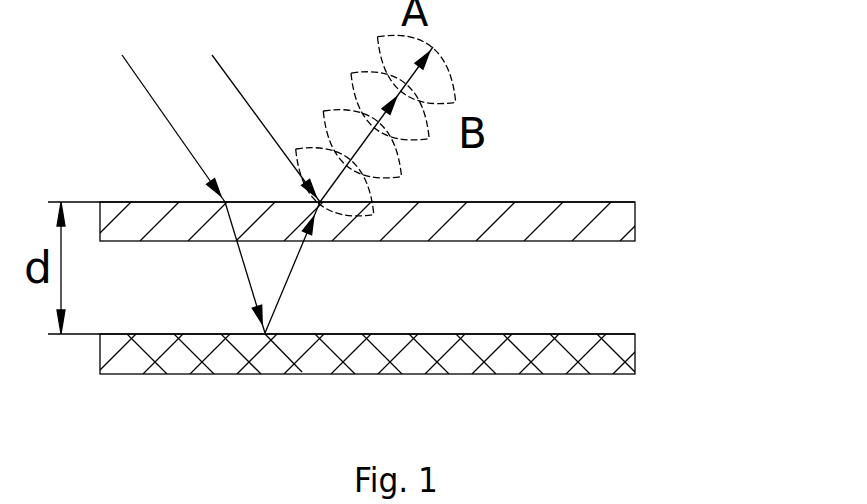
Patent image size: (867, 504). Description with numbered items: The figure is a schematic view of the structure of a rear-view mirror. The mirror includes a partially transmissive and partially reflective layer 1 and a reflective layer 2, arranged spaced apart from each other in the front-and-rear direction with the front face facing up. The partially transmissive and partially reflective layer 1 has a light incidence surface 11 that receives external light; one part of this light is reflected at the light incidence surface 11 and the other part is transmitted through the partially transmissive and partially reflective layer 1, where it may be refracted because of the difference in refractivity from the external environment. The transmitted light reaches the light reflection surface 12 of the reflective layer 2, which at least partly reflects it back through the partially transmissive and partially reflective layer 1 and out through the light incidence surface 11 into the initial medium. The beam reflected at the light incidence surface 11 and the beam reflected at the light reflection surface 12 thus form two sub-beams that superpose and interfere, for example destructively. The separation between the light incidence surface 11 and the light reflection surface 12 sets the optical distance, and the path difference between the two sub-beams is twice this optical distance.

The partially transmissive and partially reflective layer 1 is at (585, 217).
The light incidence surface 11 is at (482, 202).
The reflective layer 2 is at (588, 355).
The light reflection surface 12 is at (487, 334).